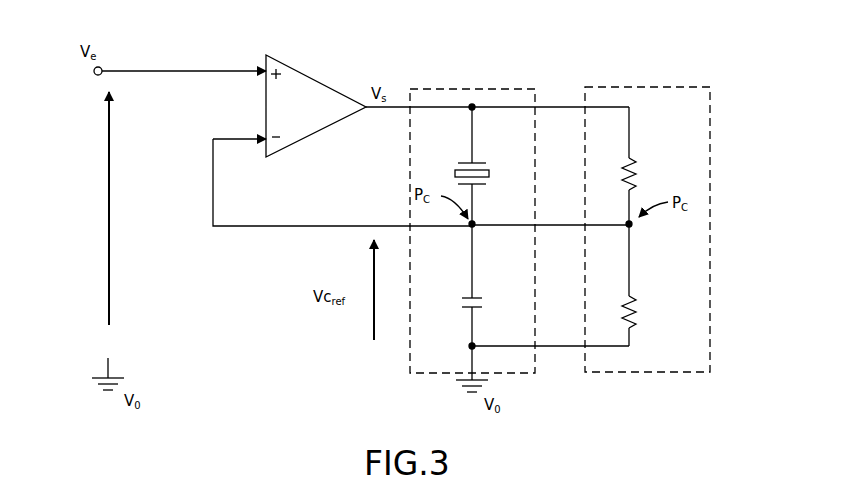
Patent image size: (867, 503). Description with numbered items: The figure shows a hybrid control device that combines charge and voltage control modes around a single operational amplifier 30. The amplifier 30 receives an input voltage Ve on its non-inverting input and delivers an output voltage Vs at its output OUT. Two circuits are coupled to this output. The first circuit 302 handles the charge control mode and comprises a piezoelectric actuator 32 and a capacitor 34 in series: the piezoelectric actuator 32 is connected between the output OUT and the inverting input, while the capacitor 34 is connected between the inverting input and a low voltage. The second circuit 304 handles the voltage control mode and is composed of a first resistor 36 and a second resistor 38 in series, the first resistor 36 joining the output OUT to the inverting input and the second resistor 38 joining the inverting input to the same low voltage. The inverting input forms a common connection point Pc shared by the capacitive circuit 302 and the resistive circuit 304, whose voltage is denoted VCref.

The operational amplifier 30 is at (313, 67).
The first circuit 302 is at (470, 88).
The second circuit 304 is at (641, 85).
The piezoelectric actuator 32 is at (493, 175).
The capacitor 34 is at (453, 308).
The first resistor 36 is at (643, 163).
The second resistor 38 is at (643, 307).